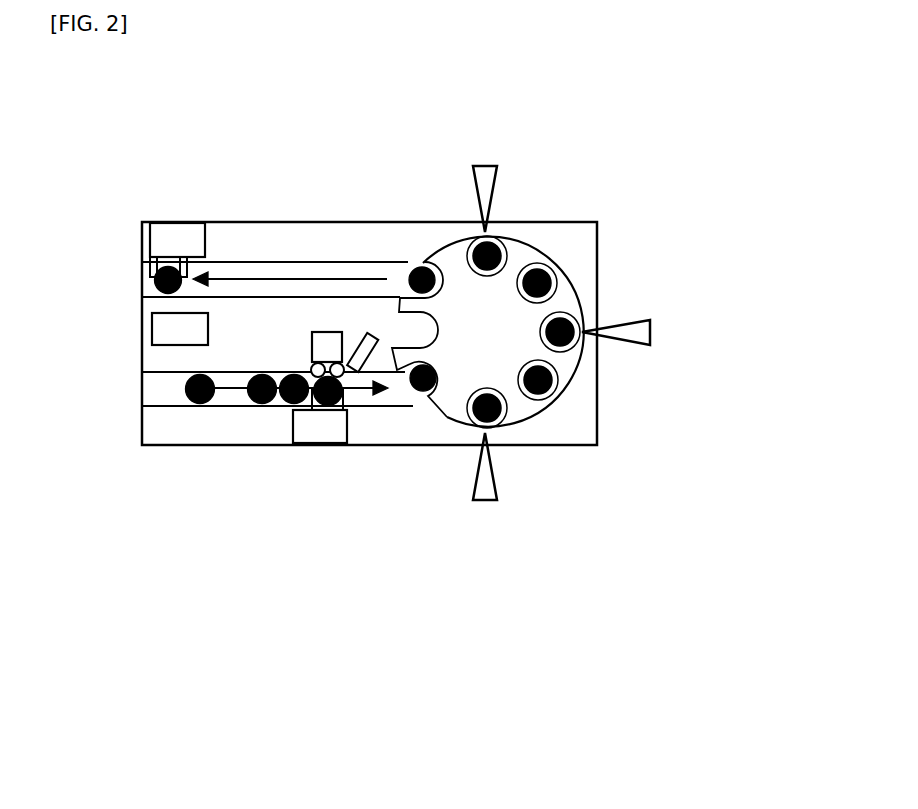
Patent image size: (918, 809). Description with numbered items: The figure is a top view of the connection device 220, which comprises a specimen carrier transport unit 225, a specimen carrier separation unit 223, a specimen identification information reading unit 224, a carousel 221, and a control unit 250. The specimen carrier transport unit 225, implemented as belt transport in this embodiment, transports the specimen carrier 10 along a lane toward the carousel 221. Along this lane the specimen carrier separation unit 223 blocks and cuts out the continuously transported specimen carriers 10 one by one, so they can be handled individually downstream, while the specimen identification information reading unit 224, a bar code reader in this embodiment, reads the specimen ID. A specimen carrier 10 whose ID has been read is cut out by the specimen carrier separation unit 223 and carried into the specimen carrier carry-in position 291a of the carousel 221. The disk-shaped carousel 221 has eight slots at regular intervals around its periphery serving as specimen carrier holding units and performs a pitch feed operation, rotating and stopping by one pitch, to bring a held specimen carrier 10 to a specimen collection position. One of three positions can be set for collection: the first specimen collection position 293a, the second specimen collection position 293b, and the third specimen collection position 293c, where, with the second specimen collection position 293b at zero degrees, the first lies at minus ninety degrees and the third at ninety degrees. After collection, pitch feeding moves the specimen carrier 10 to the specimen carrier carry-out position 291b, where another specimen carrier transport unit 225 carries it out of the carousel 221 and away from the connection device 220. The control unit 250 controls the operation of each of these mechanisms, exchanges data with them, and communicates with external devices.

The specimen carrier 10 is at (190, 372).
The connection device 220 is at (362, 222).
The carousel 221 is at (546, 264).
The specimen carrier separation unit 223 is at (142, 237).
The specimen identification information reading unit 224 is at (317, 331).
The specimen carrier transport unit 225 is at (142, 277).
The control unit 250 is at (152, 330).
The specimen carrier carry-in position 291a is at (425, 395).
The specimen carrier carry-out position 291b is at (421, 268).
The first specimen collection position 293a is at (500, 447).
The second specimen collection position 293b is at (563, 350).
The third specimen collection position 293c is at (503, 244).